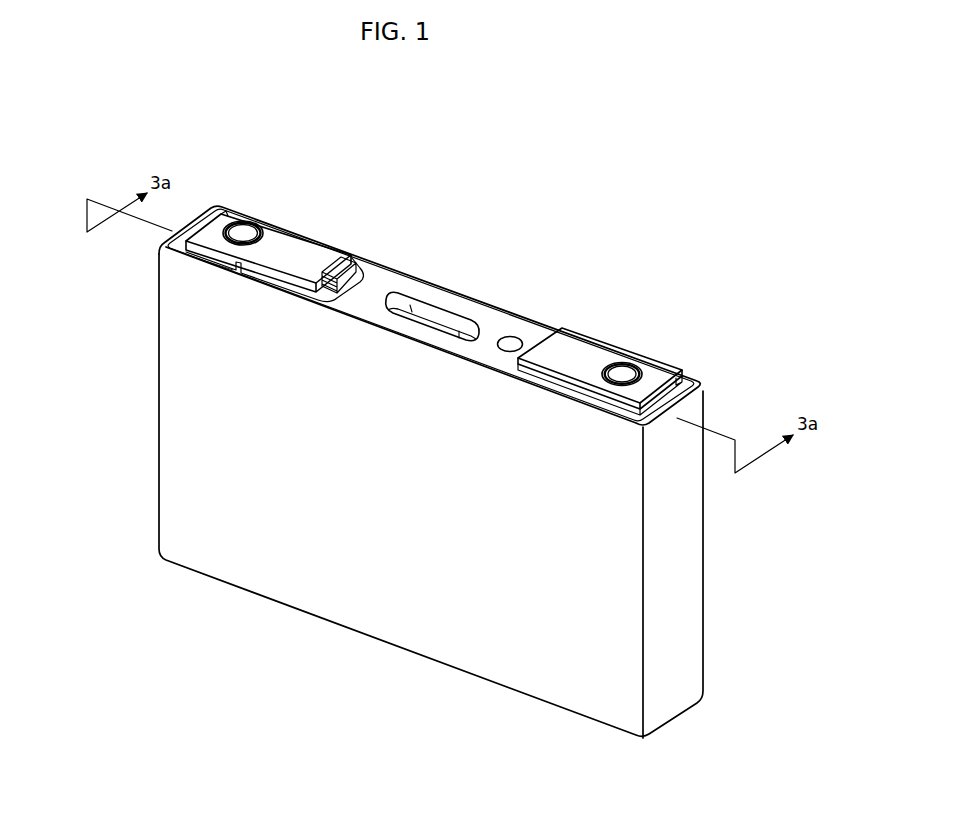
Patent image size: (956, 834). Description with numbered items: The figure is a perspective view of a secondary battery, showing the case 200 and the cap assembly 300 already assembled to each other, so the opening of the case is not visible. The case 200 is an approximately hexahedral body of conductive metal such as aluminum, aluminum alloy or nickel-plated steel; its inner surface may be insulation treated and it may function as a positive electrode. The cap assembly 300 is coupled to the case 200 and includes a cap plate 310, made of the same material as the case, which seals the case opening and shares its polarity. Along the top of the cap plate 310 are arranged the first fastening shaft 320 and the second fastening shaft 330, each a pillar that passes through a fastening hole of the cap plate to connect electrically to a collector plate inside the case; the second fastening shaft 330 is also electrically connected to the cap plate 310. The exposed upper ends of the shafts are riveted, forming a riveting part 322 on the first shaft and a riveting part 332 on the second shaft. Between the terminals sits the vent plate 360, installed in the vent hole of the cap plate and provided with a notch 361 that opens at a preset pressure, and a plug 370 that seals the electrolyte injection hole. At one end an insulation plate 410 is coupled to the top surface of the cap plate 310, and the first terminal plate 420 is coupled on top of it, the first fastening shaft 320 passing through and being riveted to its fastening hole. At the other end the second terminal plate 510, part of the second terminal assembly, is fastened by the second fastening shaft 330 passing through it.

The case 200 is at (690, 552).
The cap assembly 300 is at (429, 296).
The cap plate 310 is at (497, 318).
The first fastening shaft 320 is at (240, 228).
The riveting part 322 is at (256, 228).
The second fastening shaft 330 is at (619, 366).
The riveting part 332 is at (639, 368).
The vent plate 360 is at (445, 318).
The notch 361 is at (420, 314).
The plug 370 is at (514, 337).
The insulation plate 410 is at (364, 253).
The first terminal plate 420 is at (302, 243).
The second terminal plate 510 is at (580, 340).